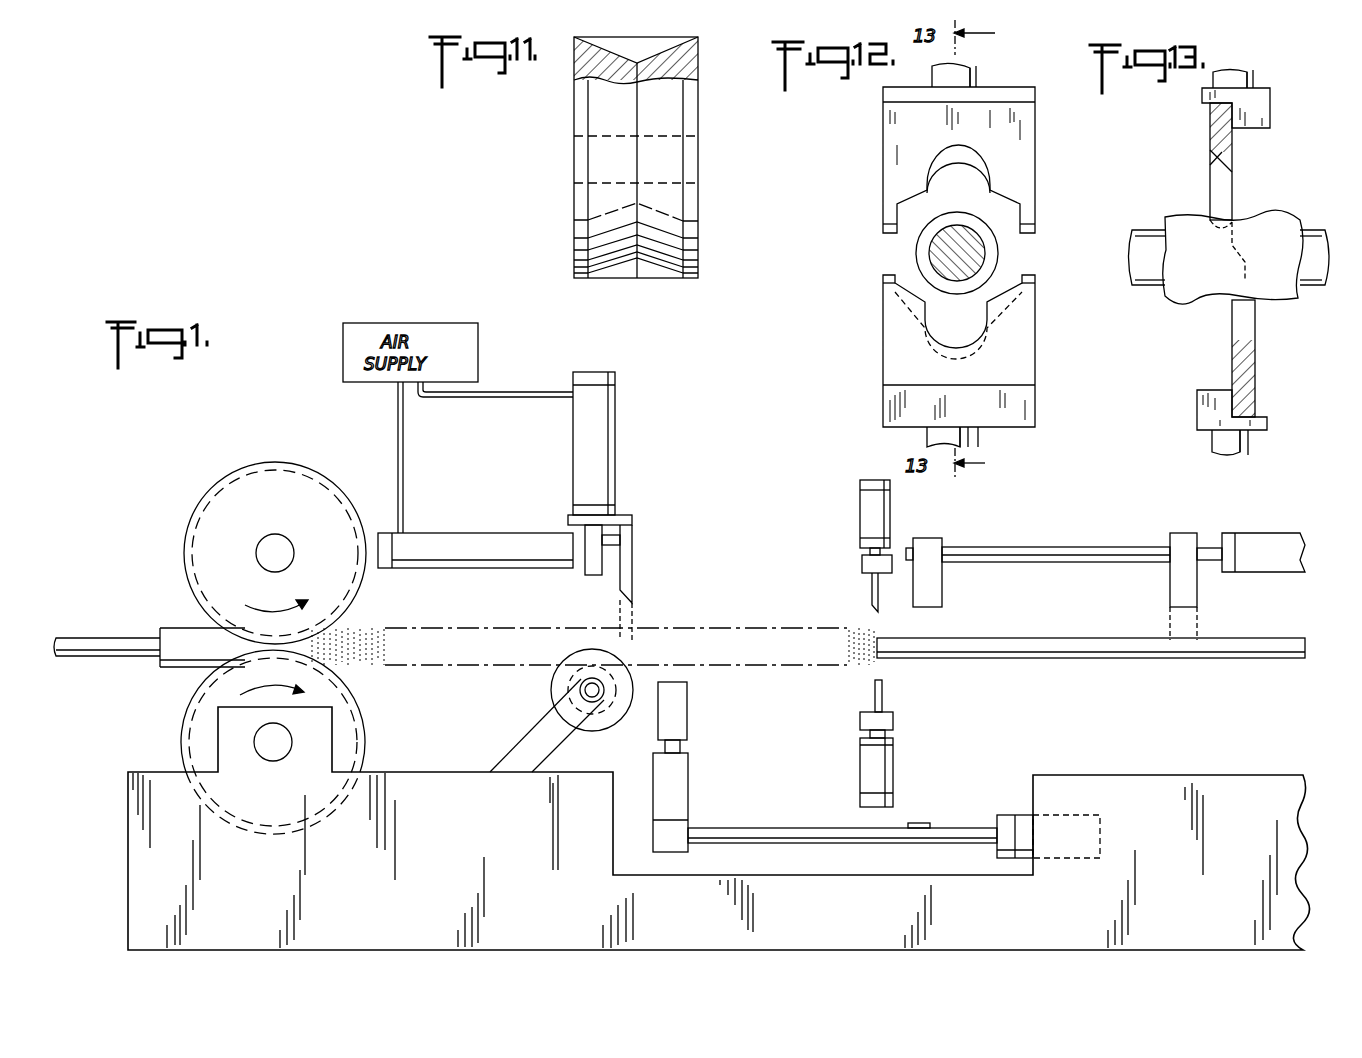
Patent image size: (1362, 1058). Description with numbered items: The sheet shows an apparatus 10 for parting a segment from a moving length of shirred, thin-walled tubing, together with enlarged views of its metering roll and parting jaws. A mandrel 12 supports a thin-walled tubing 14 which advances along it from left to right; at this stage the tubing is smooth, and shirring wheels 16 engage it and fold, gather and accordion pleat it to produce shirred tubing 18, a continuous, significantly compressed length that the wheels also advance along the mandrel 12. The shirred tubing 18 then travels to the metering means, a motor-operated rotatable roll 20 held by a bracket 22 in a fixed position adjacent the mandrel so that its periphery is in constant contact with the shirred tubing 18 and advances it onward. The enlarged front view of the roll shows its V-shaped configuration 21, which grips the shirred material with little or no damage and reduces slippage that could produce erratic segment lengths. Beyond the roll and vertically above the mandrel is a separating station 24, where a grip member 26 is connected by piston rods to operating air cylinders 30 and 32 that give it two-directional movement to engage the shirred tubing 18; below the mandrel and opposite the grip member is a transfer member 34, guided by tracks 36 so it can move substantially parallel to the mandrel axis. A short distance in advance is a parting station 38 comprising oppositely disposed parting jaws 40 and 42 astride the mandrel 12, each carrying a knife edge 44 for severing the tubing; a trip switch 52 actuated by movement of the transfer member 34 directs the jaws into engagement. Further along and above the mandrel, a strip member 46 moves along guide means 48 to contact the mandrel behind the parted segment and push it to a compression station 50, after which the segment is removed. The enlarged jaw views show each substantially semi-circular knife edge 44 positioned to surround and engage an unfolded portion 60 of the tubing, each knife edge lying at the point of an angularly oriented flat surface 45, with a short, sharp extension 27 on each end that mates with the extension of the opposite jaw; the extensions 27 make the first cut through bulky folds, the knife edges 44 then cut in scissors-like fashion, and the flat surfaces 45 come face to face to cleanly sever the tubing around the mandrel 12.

In FIG. 1, the apparatus 10 is at (1245, 768).
In FIG. 12, the mandrel 12 is at (916, 244).
In FIG. 13, the mandrel 12 is at (1320, 232).
In FIG. 1, the mandrel 12 is at (88, 634).
In FIG. 1, the thin-walled tubing 14 is at (174, 628).
In FIG. 1, the shirring wheels 16 is at (268, 490).
In FIG. 1, the shirred tubing 18 is at (376, 630).
In FIG. 11, the rotatable roll 20 is at (572, 108).
In FIG. 1, the rotatable roll 20 is at (551, 686).
In FIG. 11, the V-shaped configuration 21 is at (610, 122).
In FIG. 1, the bracket 22 is at (526, 756).
In FIG. 1, the separating station 24 is at (642, 505).
In FIG. 1, the grip member 26 is at (612, 580).
In FIG. 12, the sharp extension 27 is at (1035, 225).
In FIG. 13, the sharp extension 27 is at (1242, 250).
In FIG. 1, the air cylinder 30 is at (472, 535).
In FIG. 1, the air cylinder 32 is at (573, 450).
In FIG. 1, the transfer member 34 is at (684, 690).
In FIG. 1, the tracks 36 is at (770, 830).
In FIG. 1, the parting station 38 is at (855, 515).
In FIG. 12, the parting jaw 40 is at (1035, 170).
In FIG. 13, the parting jaw 40 is at (1212, 130).
In FIG. 1, the parting jaw 40 is at (871, 583).
In FIG. 12, the parting jaw 42 is at (1035, 328).
In FIG. 13, the parting jaw 42 is at (1255, 388).
In FIG. 1, the parting jaw 42 is at (873, 692).
In FIG. 12, the knife edge 44 is at (955, 163).
In FIG. 13, the knife edge 44 is at (1230, 182).
In FIG. 1, the knife edge 44 is at (874, 610).
In FIG. 12, the flat surface 45 is at (940, 150).
In FIG. 13, the flat surface 45 is at (1215, 160).
In FIG. 1, the flat surface 45 is at (878, 682).
In FIG. 1, the strip member 46 is at (942, 592).
In FIG. 1, the guide means 48 is at (1060, 546).
In FIG. 1, the compression station 50 is at (1170, 588).
In FIG. 1, the trip switch 52 is at (920, 822).
In FIG. 12, the unfolded portion 60 is at (1000, 258).
In FIG. 13, the unfolded portion 60 is at (1282, 222).